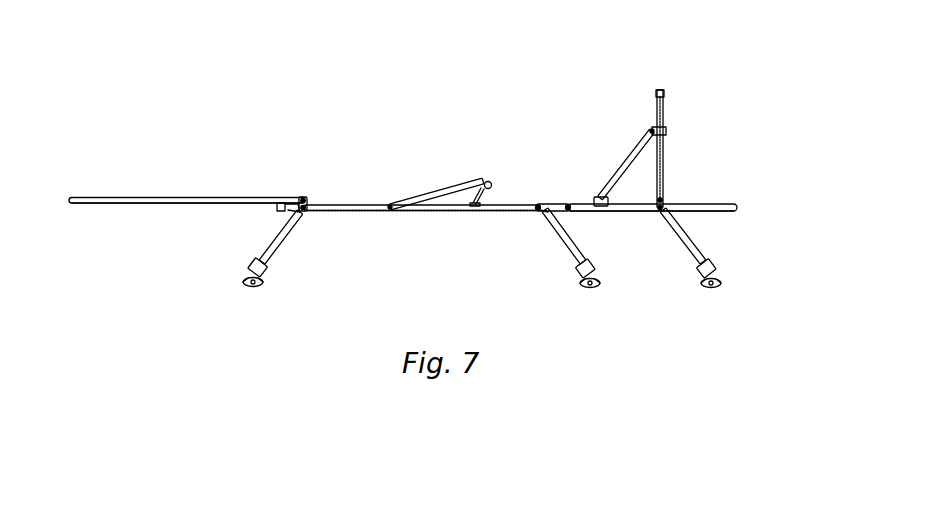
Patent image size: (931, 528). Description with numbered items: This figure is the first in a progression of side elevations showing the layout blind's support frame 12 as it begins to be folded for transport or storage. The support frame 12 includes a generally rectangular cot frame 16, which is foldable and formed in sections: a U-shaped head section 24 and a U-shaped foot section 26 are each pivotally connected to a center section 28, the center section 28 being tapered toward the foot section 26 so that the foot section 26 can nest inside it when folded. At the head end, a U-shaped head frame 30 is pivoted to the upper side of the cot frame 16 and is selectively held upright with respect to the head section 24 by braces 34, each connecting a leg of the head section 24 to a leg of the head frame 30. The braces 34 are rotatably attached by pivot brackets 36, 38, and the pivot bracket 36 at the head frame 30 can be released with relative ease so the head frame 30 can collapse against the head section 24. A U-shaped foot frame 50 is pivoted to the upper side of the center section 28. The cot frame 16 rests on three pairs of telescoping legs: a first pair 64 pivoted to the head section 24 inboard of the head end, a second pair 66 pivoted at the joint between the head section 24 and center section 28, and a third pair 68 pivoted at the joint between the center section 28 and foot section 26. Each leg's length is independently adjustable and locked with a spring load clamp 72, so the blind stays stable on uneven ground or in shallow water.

The support frame 12 is at (546, 82).
The cot frame 16 is at (368, 210).
The head section 24 is at (630, 212).
The foot section 26 is at (445, 212).
The center section 28 is at (158, 204).
The head frame 30 is at (665, 166).
The braces 34 is at (620, 166).
The pivot bracket 36 is at (651, 130).
The pivot bracket 38 is at (598, 197).
The foot frame 50 is at (438, 190).
The first pair of telescoping legs 64 is at (695, 234).
The second pair of telescoping legs 66 is at (567, 232).
The third pair of telescoping legs 68 is at (284, 242).
The spring load clamp 72 is at (252, 262).